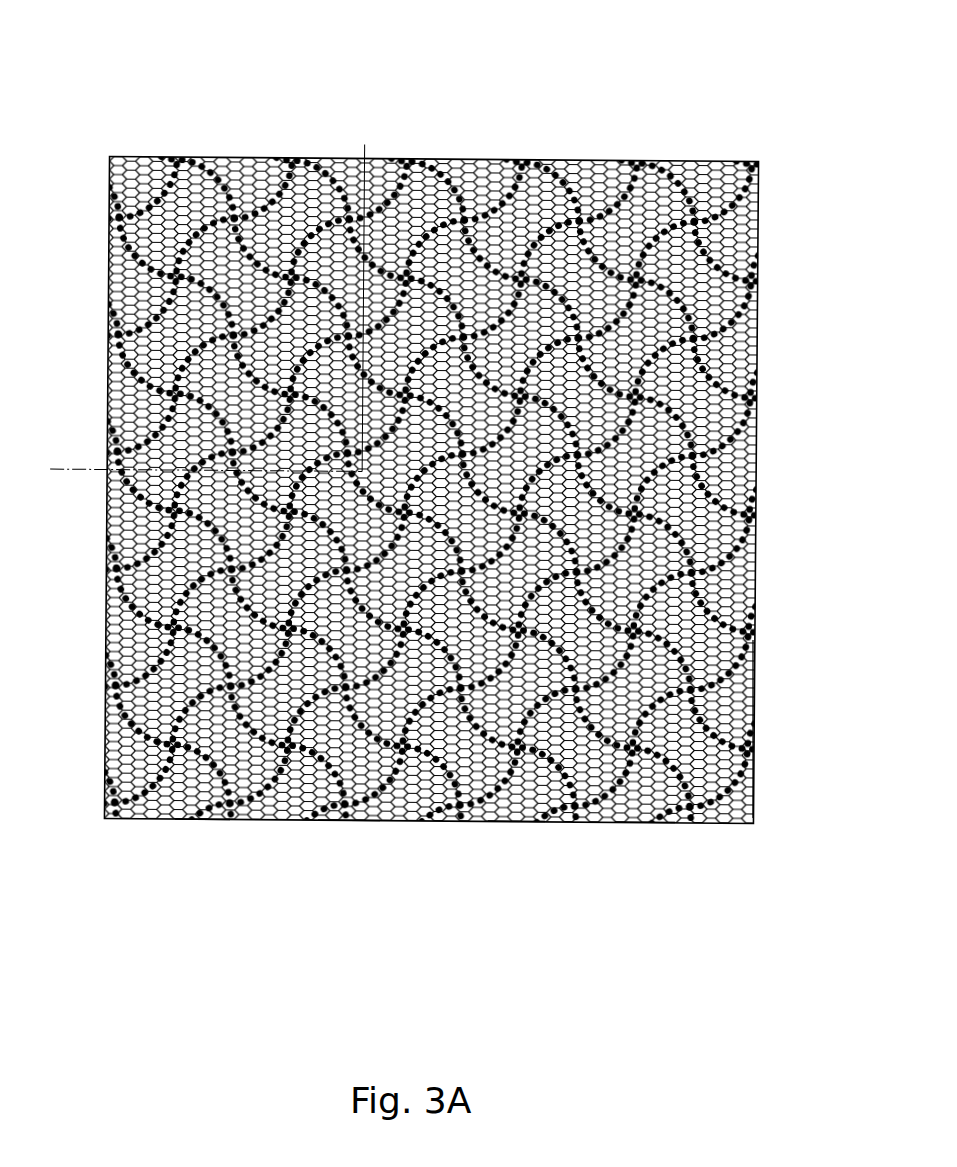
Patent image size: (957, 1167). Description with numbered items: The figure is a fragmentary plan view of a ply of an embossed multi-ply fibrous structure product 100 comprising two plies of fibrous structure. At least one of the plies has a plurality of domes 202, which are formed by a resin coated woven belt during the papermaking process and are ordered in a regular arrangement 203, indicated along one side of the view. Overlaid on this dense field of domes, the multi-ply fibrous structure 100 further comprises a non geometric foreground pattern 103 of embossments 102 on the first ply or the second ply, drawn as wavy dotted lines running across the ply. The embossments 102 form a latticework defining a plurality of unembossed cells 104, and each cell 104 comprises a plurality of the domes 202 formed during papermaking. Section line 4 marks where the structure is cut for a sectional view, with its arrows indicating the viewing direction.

The multi-ply fibrous structure product 100 is at (247, 131).
The section line for FIG. 4 is at (110, 472).
The embossments 102 is at (625, 822).
The non geometric foreground pattern 103 is at (373, 820).
The unembossed cells 104 is at (219, 819).
The domes 202 is at (495, 821).
The regular arrangement 203 is at (763, 632).